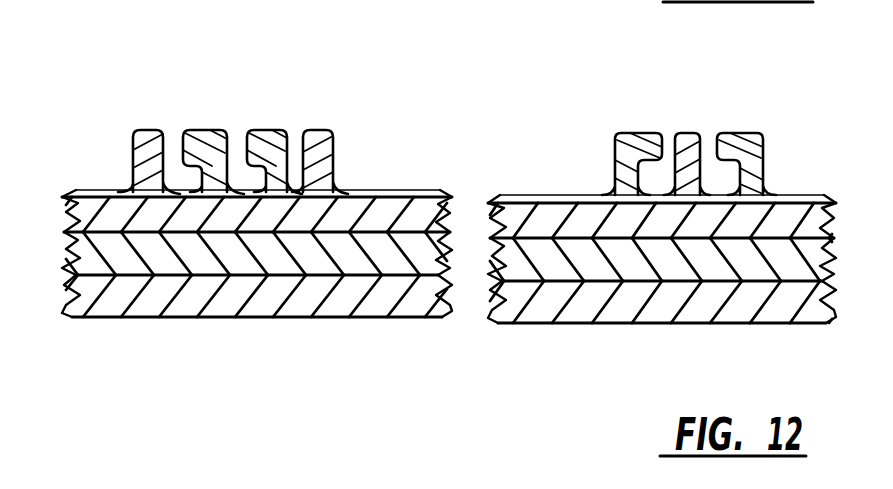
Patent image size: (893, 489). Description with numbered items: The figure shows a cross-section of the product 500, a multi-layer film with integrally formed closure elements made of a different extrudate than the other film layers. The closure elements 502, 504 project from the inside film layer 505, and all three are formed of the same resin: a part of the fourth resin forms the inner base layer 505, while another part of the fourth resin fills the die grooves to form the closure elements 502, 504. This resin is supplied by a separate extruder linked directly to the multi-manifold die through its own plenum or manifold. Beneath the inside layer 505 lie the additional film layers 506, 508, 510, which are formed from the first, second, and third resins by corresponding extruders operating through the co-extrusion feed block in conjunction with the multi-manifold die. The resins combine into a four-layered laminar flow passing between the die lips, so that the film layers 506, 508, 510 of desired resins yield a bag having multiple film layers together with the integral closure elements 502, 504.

The product 500 is at (232, 97).
The closure element 502 is at (327, 130).
The closure element 504 is at (633, 132).
The inside film layer 505 is at (115, 192).
The film layer 506 is at (440, 216).
The film layer 508 is at (60, 265).
The film layer 510 is at (257, 323).